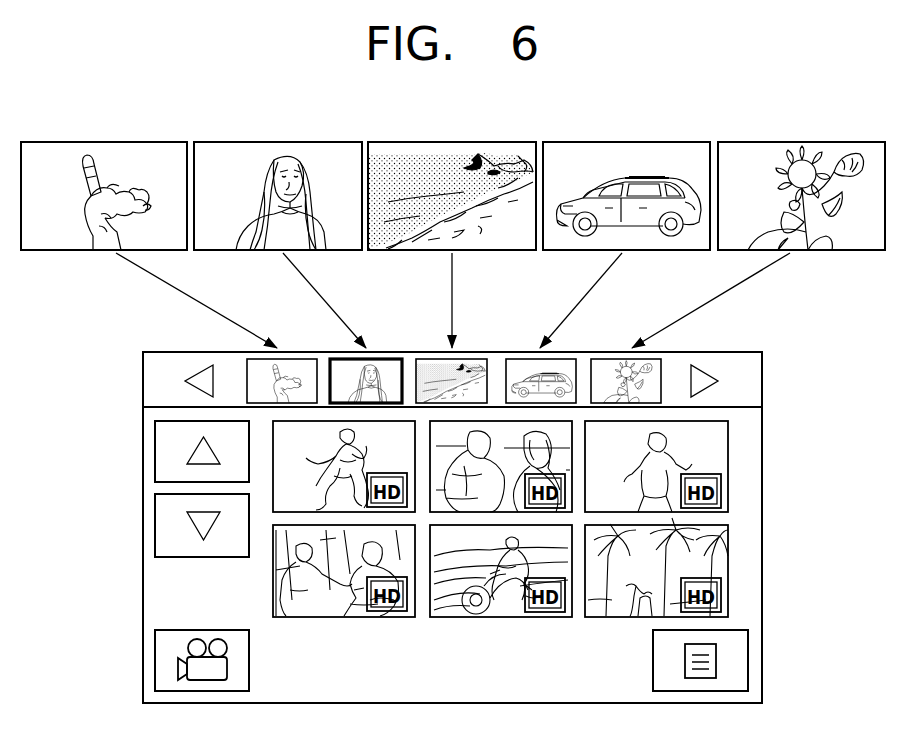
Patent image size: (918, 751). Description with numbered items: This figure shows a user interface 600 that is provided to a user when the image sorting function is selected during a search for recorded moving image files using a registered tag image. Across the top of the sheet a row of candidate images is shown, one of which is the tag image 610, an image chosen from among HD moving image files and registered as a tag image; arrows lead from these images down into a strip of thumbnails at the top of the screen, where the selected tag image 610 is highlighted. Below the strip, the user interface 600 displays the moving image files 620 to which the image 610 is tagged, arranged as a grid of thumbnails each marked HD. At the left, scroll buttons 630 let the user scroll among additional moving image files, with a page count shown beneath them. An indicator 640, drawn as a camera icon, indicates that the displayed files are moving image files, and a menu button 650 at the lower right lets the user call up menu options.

The user interface 600 is at (197, 95).
The tag image 610 is at (278, 142).
The moving image files 620 is at (729, 464).
The scroll buttons 630 is at (154, 486).
The indicator 640 is at (156, 650).
The menu button 650 is at (748, 661).